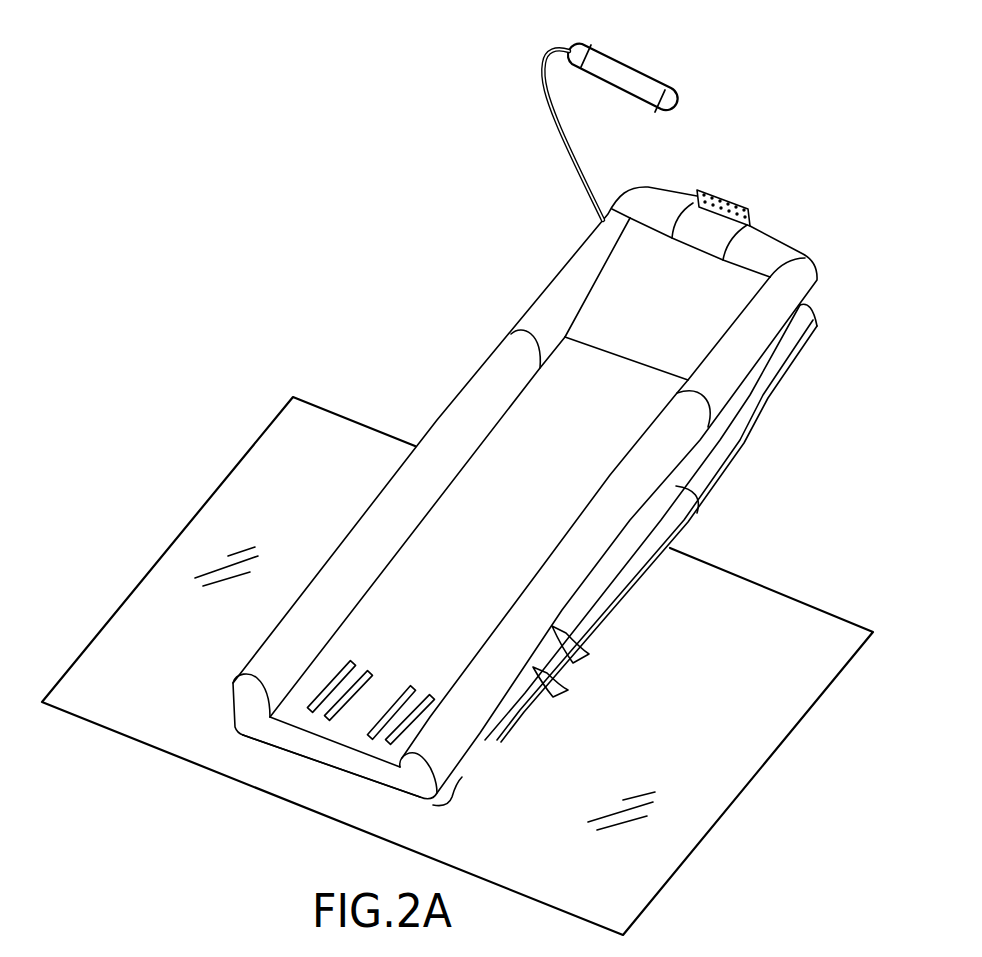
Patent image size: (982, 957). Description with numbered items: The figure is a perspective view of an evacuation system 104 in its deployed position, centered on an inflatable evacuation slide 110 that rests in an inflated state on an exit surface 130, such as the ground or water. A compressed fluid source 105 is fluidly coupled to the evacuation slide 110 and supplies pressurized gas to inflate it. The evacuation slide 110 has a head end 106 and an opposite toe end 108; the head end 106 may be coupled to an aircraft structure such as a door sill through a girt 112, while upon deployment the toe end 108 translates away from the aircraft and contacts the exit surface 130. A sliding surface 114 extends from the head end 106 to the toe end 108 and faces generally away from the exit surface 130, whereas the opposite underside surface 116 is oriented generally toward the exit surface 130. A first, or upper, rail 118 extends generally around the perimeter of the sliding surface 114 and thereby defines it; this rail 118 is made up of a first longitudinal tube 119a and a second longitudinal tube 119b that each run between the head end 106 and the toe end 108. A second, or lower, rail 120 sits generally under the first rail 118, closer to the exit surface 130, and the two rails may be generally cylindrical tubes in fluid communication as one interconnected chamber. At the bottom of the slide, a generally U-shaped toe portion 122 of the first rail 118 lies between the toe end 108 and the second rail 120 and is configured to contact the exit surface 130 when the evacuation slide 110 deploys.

The evacuation system 104 is at (415, 163).
The compressed fluid source 105 is at (633, 92).
The head end 106 is at (680, 184).
The toe end 108 is at (291, 752).
The evacuation slide 110 is at (812, 176).
The girt 112 is at (718, 203).
The sliding surface 114 is at (554, 489).
The underside surface 116 is at (536, 707).
The first rail 118 is at (593, 543).
The first longitudinal tube 119a is at (667, 433).
The second longitudinal tube 119b is at (511, 388).
The second rail 120 is at (583, 608).
The toe portion 122 is at (457, 807).
The exit surface 130 is at (594, 869).